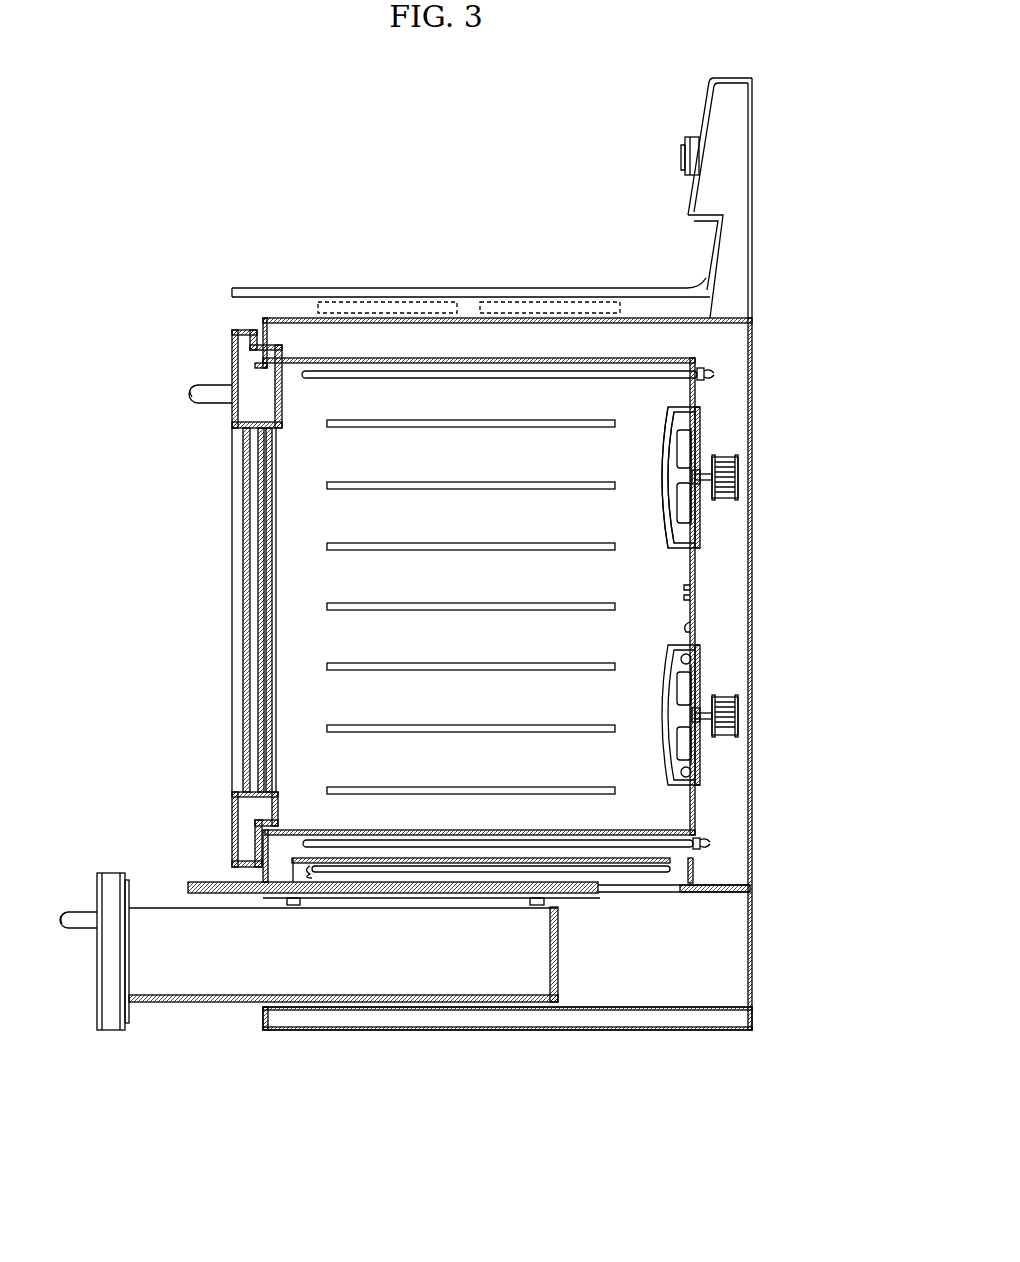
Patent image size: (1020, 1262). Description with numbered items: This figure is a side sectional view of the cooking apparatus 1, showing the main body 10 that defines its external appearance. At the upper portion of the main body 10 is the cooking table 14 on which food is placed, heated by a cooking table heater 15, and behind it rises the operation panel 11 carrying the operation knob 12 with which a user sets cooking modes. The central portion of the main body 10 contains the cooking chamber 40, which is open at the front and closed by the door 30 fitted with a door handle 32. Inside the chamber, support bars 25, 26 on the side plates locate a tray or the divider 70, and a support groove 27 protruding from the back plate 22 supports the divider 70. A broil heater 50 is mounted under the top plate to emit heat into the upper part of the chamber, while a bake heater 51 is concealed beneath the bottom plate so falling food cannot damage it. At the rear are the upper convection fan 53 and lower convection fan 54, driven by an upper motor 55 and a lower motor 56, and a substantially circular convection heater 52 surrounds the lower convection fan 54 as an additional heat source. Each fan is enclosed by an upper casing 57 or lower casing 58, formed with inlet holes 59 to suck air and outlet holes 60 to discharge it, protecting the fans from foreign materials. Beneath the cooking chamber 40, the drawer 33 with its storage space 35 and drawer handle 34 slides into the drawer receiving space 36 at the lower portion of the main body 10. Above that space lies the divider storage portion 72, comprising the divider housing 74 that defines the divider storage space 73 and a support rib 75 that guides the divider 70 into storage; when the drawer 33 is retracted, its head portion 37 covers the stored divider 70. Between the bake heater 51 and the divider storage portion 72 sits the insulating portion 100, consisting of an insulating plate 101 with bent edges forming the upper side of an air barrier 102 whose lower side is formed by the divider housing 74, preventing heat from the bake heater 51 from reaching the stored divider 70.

The cooking apparatus 1 is at (435, 65).
The main body 10 is at (762, 322).
The operation panel 11 is at (712, 97).
The operation knob 12 is at (688, 155).
The cooking table 14 is at (310, 290).
The cooking table heater 15 is at (410, 301).
The back plate 22 is at (688, 630).
The support bar 25 is at (432, 427).
The support bar 26 is at (484, 610).
The support groove 27 is at (688, 598).
The door 30 is at (247, 588).
The door handle 32 is at (195, 392).
The drawer 33 is at (307, 951).
The drawer handle 34 is at (65, 912).
The storage space 35 is at (222, 968).
The drawer receiving space 36 is at (670, 968).
The head portion 37 is at (112, 880).
The cooking chamber 40 is at (343, 525).
The broil heater 50 is at (672, 378).
The bake heater 51 is at (690, 845).
The convection heater 52 is at (690, 770).
The upper convection fan 53 is at (690, 440).
The lower convection fan 54 is at (690, 665).
The upper motor 55 is at (733, 474).
The lower motor 56 is at (735, 716).
The upper casing 57 is at (663, 515).
The lower casing 58 is at (663, 763).
The inlet holes 59 is at (662, 475).
The outlet holes 60 is at (677, 407).
The divider 70 is at (188, 882).
The divider storage portion 72 is at (557, 907).
The divider storage space 73 is at (648, 890).
The divider housing 74 is at (690, 882).
The support rib 75 is at (560, 899).
The insulating portion 100 is at (397, 831).
The insulating plate 101 is at (305, 858).
The air barrier 102 is at (300, 878).